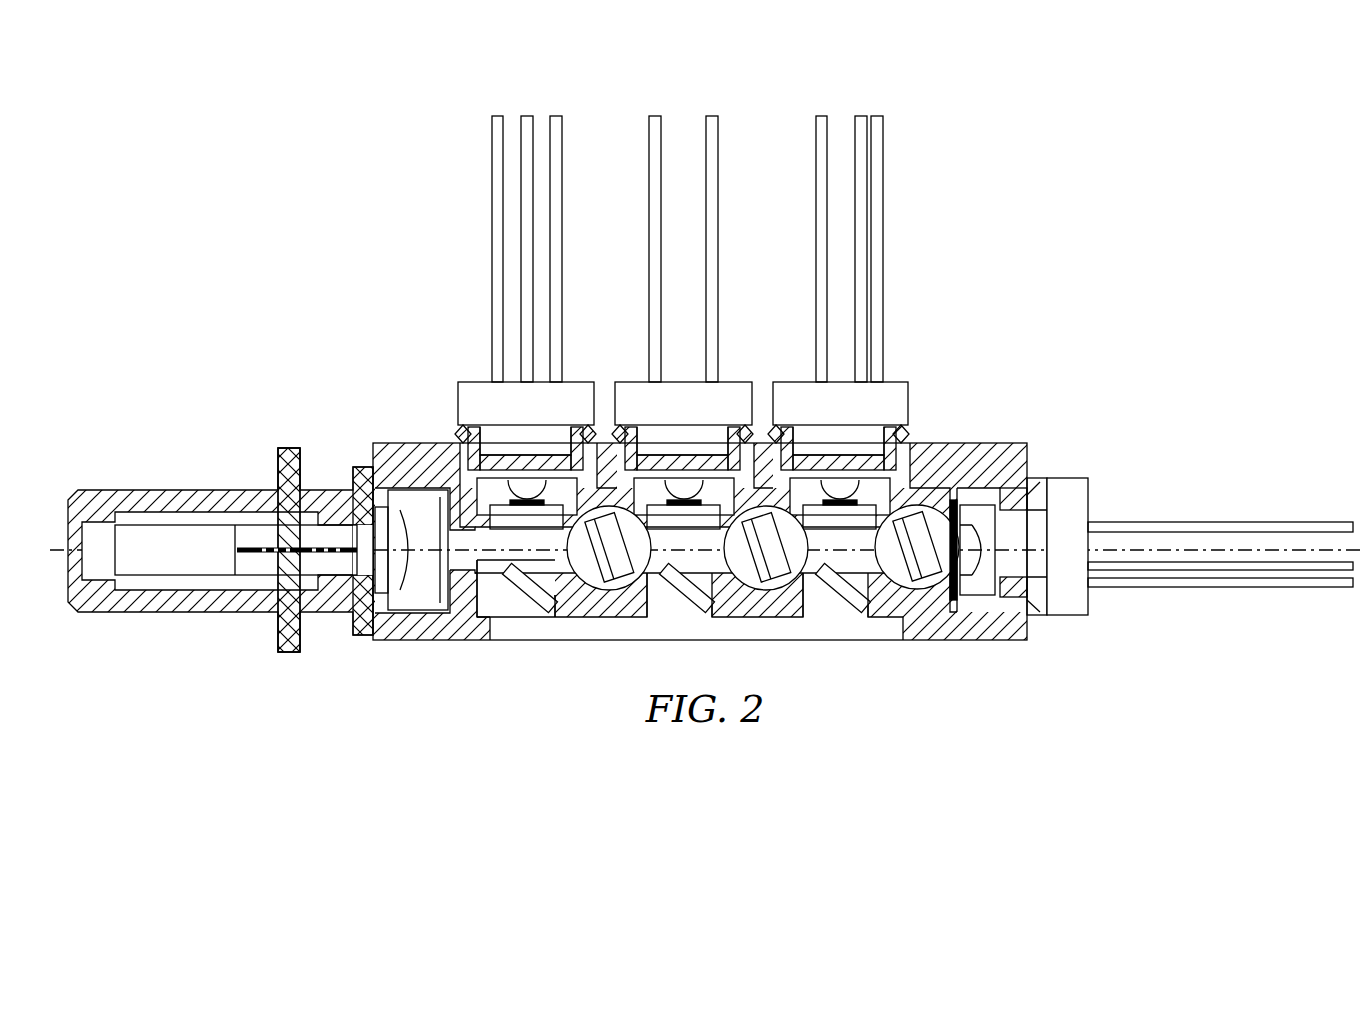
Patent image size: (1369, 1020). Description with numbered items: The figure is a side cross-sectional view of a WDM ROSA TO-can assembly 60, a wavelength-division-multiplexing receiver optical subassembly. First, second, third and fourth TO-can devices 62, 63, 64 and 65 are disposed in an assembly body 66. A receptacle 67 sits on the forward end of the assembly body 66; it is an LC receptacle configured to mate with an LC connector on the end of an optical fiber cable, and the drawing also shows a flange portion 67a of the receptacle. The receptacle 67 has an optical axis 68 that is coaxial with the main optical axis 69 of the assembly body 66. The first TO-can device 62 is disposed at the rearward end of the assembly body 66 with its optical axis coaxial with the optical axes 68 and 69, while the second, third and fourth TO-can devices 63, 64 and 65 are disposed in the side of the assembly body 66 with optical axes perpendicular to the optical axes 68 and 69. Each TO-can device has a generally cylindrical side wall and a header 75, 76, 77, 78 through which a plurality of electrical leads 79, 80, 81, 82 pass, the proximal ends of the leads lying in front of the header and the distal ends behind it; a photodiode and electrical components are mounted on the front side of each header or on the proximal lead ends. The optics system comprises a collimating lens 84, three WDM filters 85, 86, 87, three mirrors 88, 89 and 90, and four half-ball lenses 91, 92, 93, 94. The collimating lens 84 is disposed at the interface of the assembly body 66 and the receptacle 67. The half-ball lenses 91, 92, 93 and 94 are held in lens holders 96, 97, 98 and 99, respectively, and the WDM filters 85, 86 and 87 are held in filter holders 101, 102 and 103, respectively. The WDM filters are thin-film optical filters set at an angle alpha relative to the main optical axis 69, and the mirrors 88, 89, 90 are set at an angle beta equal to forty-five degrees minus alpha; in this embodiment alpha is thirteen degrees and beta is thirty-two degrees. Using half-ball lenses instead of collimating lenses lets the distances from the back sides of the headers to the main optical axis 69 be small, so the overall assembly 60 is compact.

The WDM ROSA TO-can assembly 60 is at (206, 393).
The first TO-can device 62 is at (1020, 508).
The second TO-can device 63 is at (778, 425).
The third TO-can device 64 is at (622, 425).
The fourth TO-can device 65 is at (460, 432).
The assembly body 66 is at (388, 455).
The receptacle 67 is at (232, 490).
The fitting flange 67a is at (338, 572).
The optical axis 68 is at (190, 548).
The main optical axis 69 is at (712, 548).
The header 75 is at (1070, 493).
The header 76 is at (903, 382).
The header 77 is at (740, 382).
The header 78 is at (472, 382).
The electrical leads 79 is at (1140, 525).
The electrical leads 80 is at (883, 262).
The electrical leads 81 is at (661, 172).
The electrical leads 82 is at (503, 170).
The collimating lens 84 is at (430, 570).
The WDM filter 85 is at (890, 613).
The WDM filter 86 is at (735, 612).
The WDM filter 87 is at (630, 615).
The mirror 88 is at (837, 585).
The mirror 89 is at (672, 583).
The mirror 90 is at (527, 597).
The half-ball lens 91 is at (983, 540).
The half-ball lens 92 is at (840, 480).
The half-ball lens 93 is at (684, 480).
The half-ball lens 94 is at (527, 480).
The lens holder 96 is at (970, 590).
The lens holder 97 is at (888, 493).
The lens holder 98 is at (732, 493).
The lens holder 99 is at (575, 493).
The filter holder 101 is at (903, 567).
The filter holder 102 is at (757, 585).
The filter holder 103 is at (598, 590).